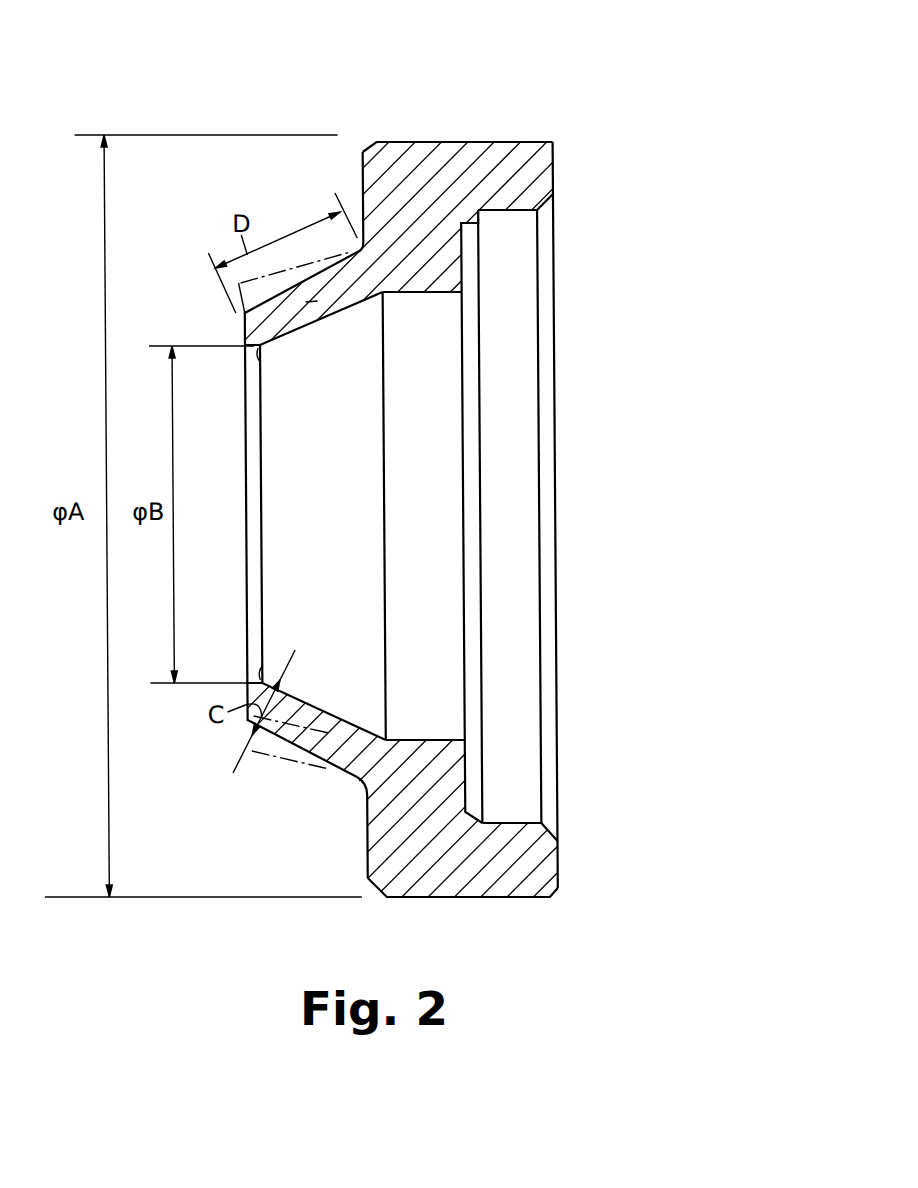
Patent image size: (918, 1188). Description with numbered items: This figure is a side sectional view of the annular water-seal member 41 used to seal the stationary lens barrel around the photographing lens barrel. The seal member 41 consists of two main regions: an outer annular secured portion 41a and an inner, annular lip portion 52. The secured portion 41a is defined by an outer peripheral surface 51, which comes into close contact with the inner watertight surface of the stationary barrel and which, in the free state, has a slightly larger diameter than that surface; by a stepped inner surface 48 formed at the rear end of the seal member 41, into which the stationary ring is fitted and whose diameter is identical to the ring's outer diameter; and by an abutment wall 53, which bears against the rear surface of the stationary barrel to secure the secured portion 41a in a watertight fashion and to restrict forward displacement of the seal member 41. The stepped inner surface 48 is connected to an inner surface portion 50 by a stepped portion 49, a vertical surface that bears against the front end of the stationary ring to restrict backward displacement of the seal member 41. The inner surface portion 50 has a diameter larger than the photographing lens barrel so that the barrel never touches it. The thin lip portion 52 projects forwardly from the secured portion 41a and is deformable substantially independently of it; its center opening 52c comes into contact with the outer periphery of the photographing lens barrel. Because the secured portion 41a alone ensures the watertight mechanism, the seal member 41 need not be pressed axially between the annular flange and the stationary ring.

The annular water-seal member 41 is at (512, 85).
The outer annular secured portion 41a is at (467, 190).
The stepped inner surface 48 is at (507, 210).
The stepped portion 49 is at (462, 260).
The inner surface portion 50 is at (420, 293).
The outer peripheral surface 51 is at (408, 142).
The lip portion 52 is at (300, 288).
The center opening 52c is at (257, 350).
The abutment wall 53 is at (363, 193).